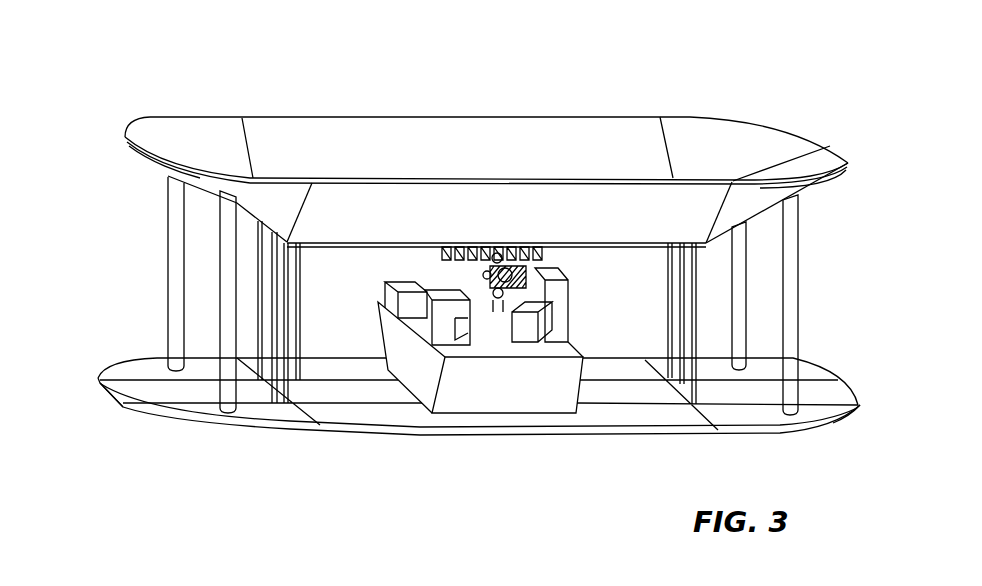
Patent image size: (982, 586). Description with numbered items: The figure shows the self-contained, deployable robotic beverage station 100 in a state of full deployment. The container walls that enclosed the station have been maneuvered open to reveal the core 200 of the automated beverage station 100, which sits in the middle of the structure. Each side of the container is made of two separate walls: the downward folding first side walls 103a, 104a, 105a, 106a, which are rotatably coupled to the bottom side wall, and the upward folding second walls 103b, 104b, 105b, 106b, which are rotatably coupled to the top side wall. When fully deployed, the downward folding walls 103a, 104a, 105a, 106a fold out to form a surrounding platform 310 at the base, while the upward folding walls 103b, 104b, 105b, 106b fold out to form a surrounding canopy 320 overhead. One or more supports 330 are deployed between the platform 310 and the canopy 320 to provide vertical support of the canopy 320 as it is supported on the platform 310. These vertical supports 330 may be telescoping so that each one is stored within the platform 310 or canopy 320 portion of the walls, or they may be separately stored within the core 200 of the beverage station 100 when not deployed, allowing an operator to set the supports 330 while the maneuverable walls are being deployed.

The self-contained, deployable robotic beverage station 100 is at (297, 470).
The core 200 is at (481, 393).
The surrounding platform 310 is at (613, 402).
The surrounding canopy 320 is at (183, 115).
The supports 330 is at (222, 273).
The first side wall 103a is at (554, 432).
The second wall 103b is at (434, 218).
The first side wall 104a is at (613, 362).
The second wall 104b is at (345, 118).
The first side wall 105a is at (143, 392).
The second wall 105b is at (146, 165).
The first side wall 106a is at (833, 386).
The second wall 106b is at (821, 157).